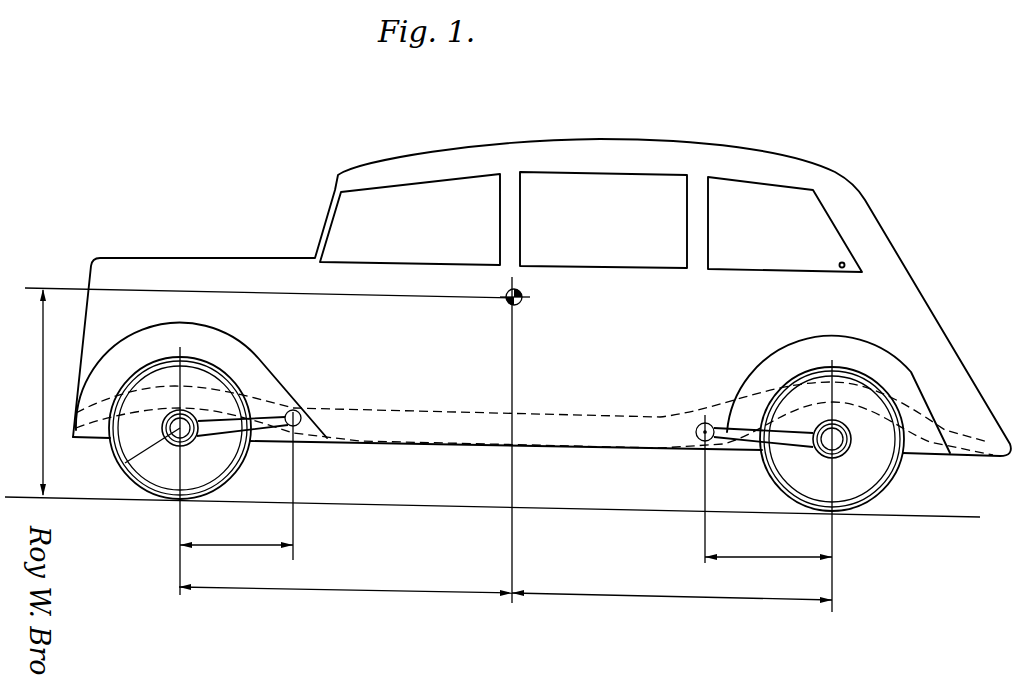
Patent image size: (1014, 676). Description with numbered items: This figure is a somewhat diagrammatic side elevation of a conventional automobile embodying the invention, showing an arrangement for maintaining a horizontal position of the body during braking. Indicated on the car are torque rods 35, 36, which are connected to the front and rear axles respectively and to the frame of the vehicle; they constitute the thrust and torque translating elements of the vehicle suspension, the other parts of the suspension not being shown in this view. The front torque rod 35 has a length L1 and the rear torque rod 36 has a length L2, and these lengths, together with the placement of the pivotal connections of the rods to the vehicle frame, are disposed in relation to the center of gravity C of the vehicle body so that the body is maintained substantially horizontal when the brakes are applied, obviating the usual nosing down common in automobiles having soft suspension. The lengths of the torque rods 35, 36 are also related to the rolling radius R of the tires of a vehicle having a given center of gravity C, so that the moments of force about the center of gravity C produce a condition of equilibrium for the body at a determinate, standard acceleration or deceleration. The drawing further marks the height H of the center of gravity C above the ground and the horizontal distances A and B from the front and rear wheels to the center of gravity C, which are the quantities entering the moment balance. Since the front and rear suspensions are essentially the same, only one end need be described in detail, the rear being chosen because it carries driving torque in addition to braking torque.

The torque rod 35 is at (255, 432).
The torque rod 36 is at (770, 447).
The center of gravity C is at (523, 440).
The height of center of gravity above ground H is at (261, 392).
The rolling radius R is at (152, 447).
The length of torque rod L1 is at (236, 534).
The length of torque rod L2 is at (768, 547).
The distance from front axle to center of gravity A is at (345, 581).
The distance from center of gravity to rear axle B is at (672, 588).